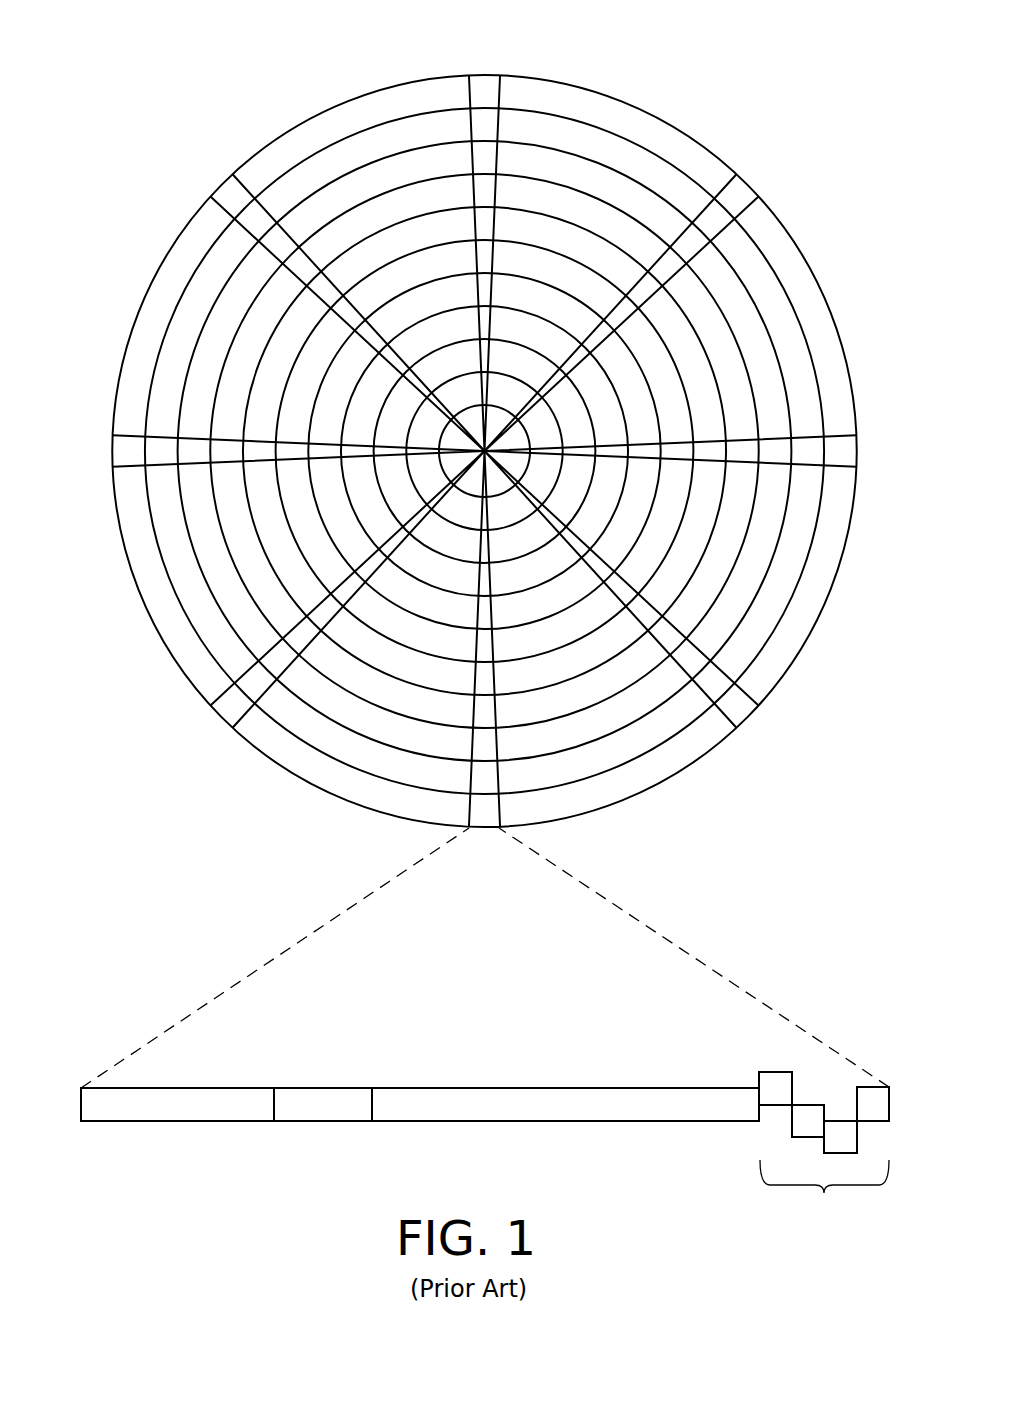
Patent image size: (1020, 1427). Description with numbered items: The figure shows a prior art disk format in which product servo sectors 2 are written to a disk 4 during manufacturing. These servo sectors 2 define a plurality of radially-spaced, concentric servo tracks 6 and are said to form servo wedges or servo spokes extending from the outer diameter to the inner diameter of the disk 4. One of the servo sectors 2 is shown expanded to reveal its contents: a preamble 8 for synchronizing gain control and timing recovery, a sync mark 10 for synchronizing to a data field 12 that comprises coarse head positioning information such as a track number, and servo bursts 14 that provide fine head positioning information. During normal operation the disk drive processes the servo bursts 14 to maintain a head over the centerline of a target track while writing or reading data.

The product servo sectors 2 is at (486, 465).
The disk 4 is at (207, 76).
The servo tracks 6 is at (611, 150).
The preamble 8 is at (153, 1122).
The sync mark 10 is at (318, 1122).
The data field 12 is at (550, 1122).
The servo bursts 14 is at (742, 1049).